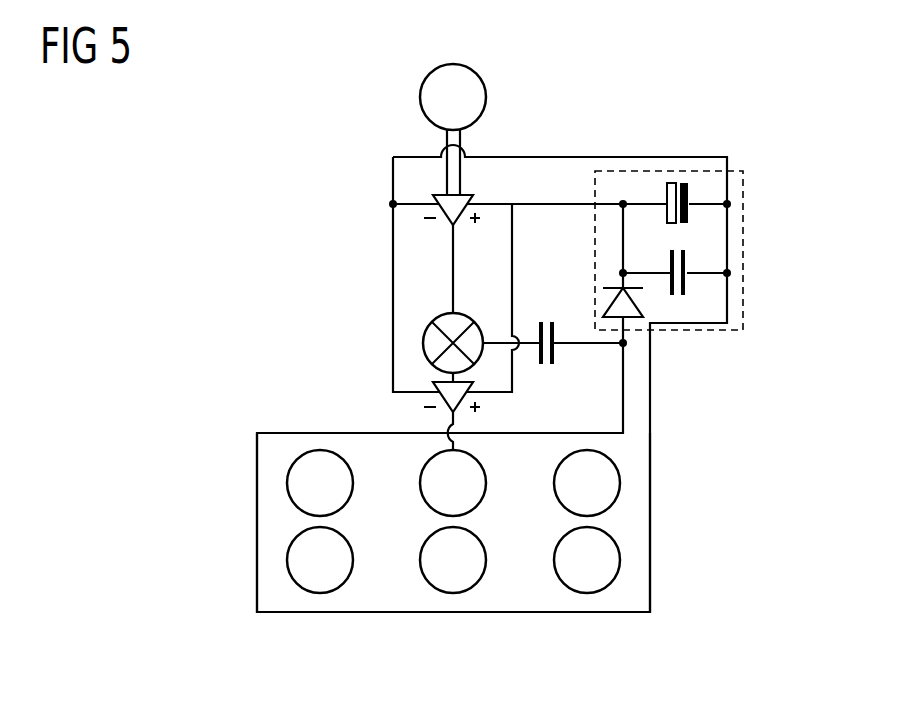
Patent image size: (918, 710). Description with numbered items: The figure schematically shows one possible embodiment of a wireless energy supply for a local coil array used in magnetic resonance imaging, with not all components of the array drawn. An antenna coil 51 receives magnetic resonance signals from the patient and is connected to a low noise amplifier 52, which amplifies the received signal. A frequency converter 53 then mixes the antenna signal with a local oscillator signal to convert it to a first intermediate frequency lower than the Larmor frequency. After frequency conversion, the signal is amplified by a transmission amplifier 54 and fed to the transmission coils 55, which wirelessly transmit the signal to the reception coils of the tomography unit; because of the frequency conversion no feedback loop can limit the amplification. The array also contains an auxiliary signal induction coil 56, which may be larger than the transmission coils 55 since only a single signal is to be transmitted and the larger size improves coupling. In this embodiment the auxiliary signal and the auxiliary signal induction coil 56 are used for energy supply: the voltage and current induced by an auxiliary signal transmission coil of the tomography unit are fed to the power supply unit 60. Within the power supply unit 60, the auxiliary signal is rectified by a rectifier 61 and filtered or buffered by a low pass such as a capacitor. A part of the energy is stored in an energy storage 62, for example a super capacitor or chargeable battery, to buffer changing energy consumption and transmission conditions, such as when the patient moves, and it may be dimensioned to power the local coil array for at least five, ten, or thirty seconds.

The antenna coil 51 is at (420, 98).
The low noise amplifier 52 is at (463, 194).
The frequency converter 53 is at (423, 343).
The transmission amplifier 54 is at (440, 397).
The transmission coil 55 is at (287, 483).
The auxiliary signal induction coil 56 is at (650, 590).
The power supply unit 60 is at (683, 245).
The rectifier 61 is at (602, 297).
The energy storage 62 is at (690, 195).